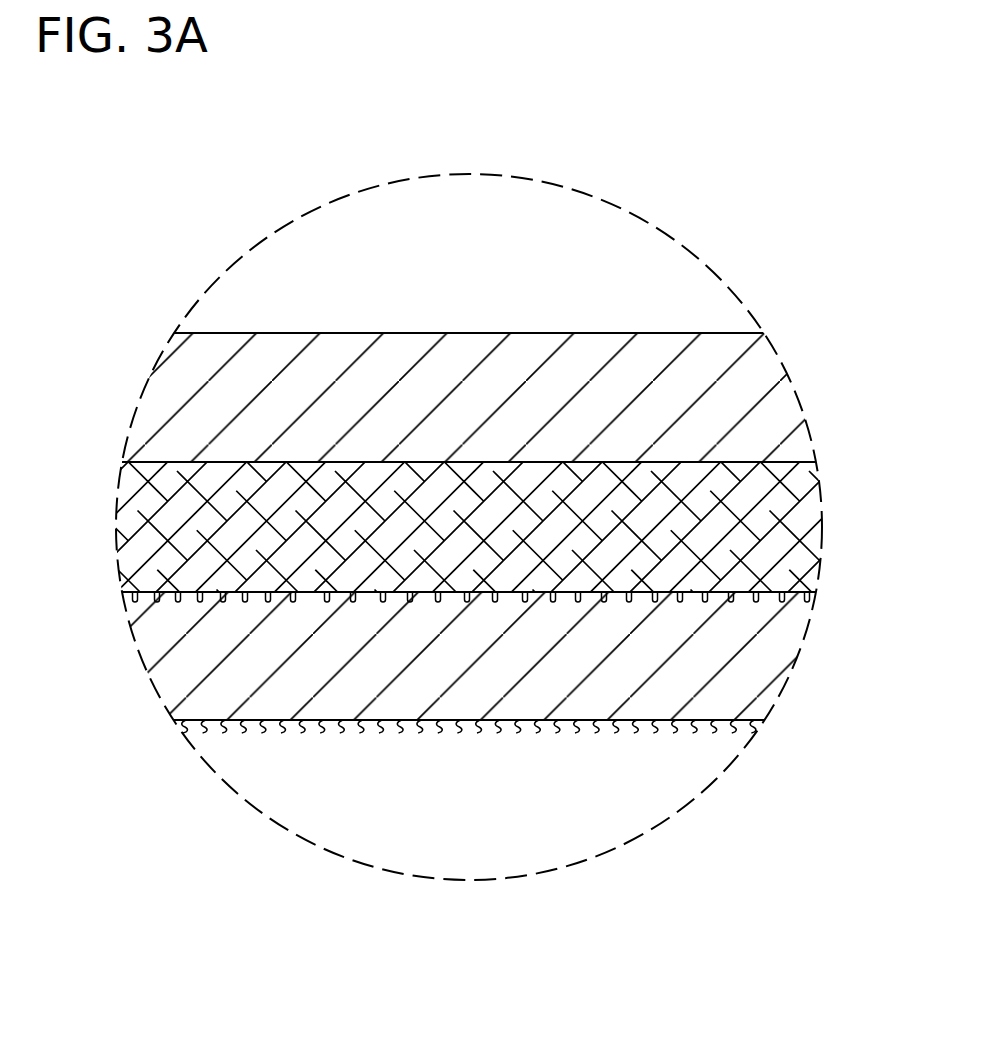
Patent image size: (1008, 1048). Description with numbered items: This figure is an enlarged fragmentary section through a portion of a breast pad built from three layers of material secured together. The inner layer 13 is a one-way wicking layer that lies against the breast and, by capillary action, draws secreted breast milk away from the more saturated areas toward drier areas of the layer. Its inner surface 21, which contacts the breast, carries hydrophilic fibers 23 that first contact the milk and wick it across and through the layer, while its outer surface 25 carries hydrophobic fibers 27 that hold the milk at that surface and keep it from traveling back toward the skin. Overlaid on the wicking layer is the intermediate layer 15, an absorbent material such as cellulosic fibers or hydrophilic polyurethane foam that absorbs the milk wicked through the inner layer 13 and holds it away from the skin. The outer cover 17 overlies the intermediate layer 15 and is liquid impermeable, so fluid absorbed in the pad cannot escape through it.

The inner layer 13 is at (758, 673).
The intermediate layer 15 is at (150, 505).
The outer layer or cover 17 is at (522, 360).
The inner surface 21 is at (252, 722).
The hydrophilic fibers 23 is at (335, 727).
The outer surface 25 is at (728, 592).
The hydrophobic fibers 27 is at (177, 596).